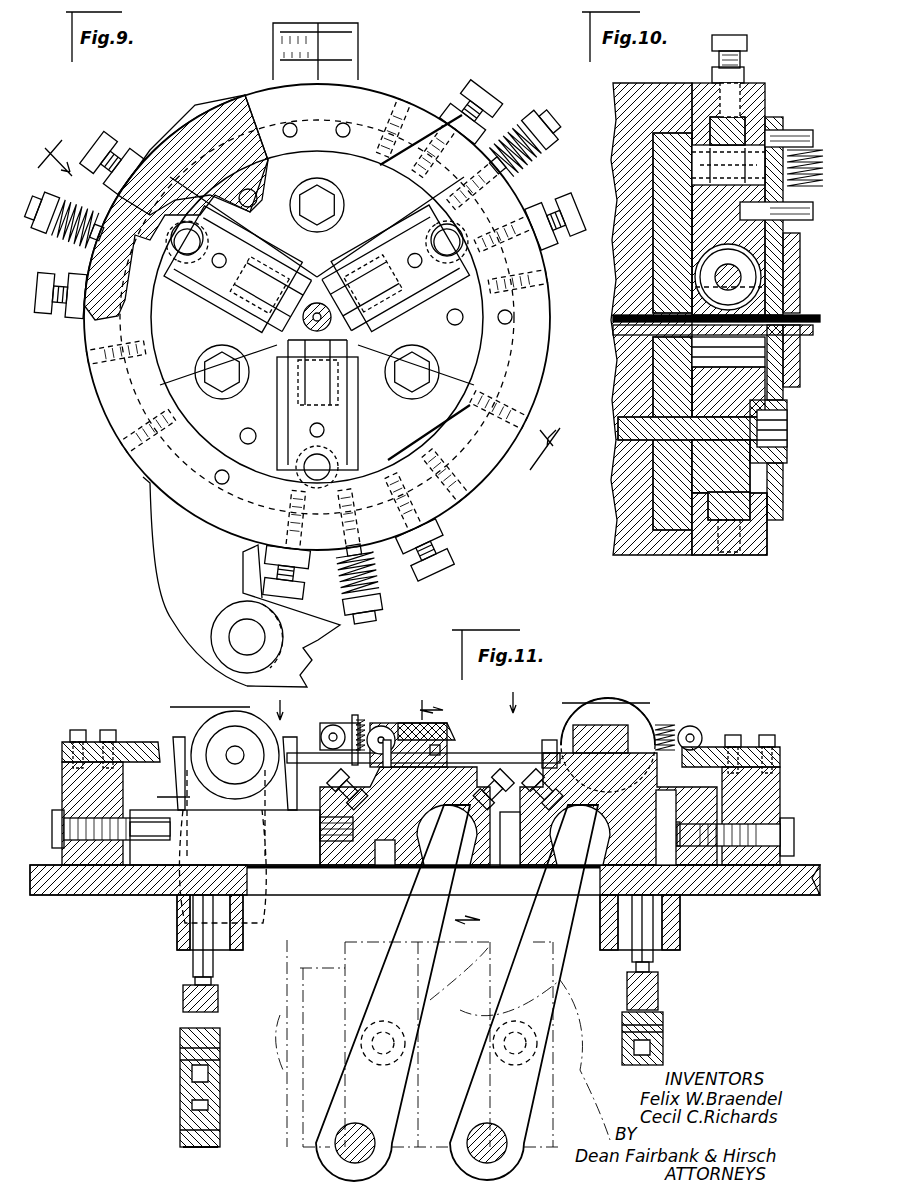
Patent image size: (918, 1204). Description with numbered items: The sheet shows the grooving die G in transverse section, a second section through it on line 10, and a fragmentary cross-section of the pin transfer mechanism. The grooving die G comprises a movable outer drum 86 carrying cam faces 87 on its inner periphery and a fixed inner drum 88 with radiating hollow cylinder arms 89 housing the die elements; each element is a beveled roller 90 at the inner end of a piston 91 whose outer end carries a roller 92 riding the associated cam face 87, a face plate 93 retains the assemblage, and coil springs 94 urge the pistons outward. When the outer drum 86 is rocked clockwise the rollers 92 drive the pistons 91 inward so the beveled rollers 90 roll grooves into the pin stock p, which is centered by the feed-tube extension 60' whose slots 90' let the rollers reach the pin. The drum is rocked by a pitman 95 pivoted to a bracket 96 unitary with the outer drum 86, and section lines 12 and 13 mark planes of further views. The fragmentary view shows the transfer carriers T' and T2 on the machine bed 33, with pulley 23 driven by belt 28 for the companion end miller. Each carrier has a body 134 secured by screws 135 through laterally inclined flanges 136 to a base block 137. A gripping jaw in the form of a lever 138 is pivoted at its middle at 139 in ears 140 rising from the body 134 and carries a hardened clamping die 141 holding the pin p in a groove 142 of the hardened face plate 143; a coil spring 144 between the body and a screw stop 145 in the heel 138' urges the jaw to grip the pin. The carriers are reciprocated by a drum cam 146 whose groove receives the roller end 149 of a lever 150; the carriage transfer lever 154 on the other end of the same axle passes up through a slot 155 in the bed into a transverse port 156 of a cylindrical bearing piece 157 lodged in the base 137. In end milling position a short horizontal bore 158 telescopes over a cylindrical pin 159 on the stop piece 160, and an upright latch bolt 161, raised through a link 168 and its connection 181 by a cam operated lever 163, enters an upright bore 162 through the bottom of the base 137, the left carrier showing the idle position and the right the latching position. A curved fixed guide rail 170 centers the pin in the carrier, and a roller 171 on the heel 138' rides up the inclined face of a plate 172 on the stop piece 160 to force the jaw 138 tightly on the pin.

In FIG. 9, the grooving die G is at (413, 88).
In FIG. 10, the grooving die G is at (602, 88).
In FIG. 9, the movable outer drum 86 is at (88, 330).
In FIG. 10, the movable outer drum 86 is at (742, 95).
In FIG. 9, the cam faces 87 is at (172, 175).
In FIG. 10, the cam faces 87 is at (745, 125).
In FIG. 9, the fixed inner drum 88 is at (270, 162).
In FIG. 9, the hollow cylinder arms 89 is at (228, 300).
In FIG. 9, the beveled roller 90 is at (290, 323).
In FIG. 10, the beveled roller 90 is at (674, 277).
In FIG. 9, the piston 91 is at (245, 250).
In FIG. 10, the piston 91 is at (705, 215).
In FIG. 9, the roller 92 is at (187, 222).
In FIG. 10, the roller 92 is at (738, 160).
In FIG. 10, the face plate 93 is at (770, 490).
In FIG. 10, the coil springs 94 is at (790, 218).
In FIG. 9, the pitman 95 is at (330, 637).
In FIG. 9, the bracket 96 is at (160, 556).
In FIG. 9, the plate 60' is at (374, 344).
In FIG. 10, the plate 60' is at (696, 309).
In FIG. 9, the pin stock p is at (285, 330).
In FIG. 10, the pin stock p is at (613, 328).
In FIG. 11, the pin stock p is at (373, 767).
In FIG. 9, the section line 10— 10 is at (299, 298).
In FIG. 10, the slots 90' is at (797, 216).
In FIG. 11, the section arrow 12 is at (383, 701).
In FIG. 11, the section arrow 13 is at (450, 806).
In FIG. 11, the pulley 23 is at (235, 715).
In FIG. 11, the belt 28 is at (200, 708).
In FIG. 11, the base 33 is at (710, 890).
In FIG. 11, the body 134 is at (320, 820).
In FIG. 11, the screws 135 is at (338, 780).
In FIG. 11, the laterally inclined flanges 136 is at (330, 796).
In FIG. 11, the base block 137 is at (360, 867).
In FIG. 11, the lever 138 is at (532, 712).
In FIG. 11, the heel 138' is at (380, 727).
In FIG. 11, the pivot 139 is at (695, 705).
In FIG. 11, the ears 140 is at (436, 724).
In FIG. 11, the hardened clamping die 141 is at (448, 742).
In FIG. 11, the groove 142 is at (518, 809).
In FIG. 11, the hardened face plate 143 is at (450, 760).
In FIG. 11, the coil spring 144 is at (386, 740).
In FIG. 11, the screw stop 145 is at (355, 715).
In FIG. 11, the cam 146 is at (433, 1150).
In FIG. 11, the roller end 149 is at (388, 1022).
In FIG. 11, the lever 150 is at (560, 915).
In FIG. 11, the carriage transfer lever 154 is at (405, 922).
In FIG. 11, the slot 155 is at (312, 875).
In FIG. 11, the transverse port 156 is at (505, 867).
In FIG. 11, the cylindrical bearing piece 157 is at (530, 867).
In FIG. 11, the horizontal bore 158 is at (320, 833).
In FIG. 11, the cylindrical pin 159 is at (150, 855).
In FIG. 11, the stop piece 160 is at (65, 785).
In FIG. 11, the latch bolt 161 is at (193, 935).
In FIG. 11, the upright bore 162 is at (390, 867).
In FIG. 11, the lever 163 is at (200, 1150).
In FIG. 11, the link 168 is at (180, 1082).
In FIG. 11, the curved fixed guide rail 170 is at (547, 740).
In FIG. 11, the roller 171 is at (322, 730).
In FIG. 11, the plate 172 is at (135, 742).
In FIG. 11, the nut 181 is at (183, 1000).
In FIG. 11, the transfer carrier T2 is at (423, 682).
In FIG. 11, the transfer carrier T' is at (615, 680).